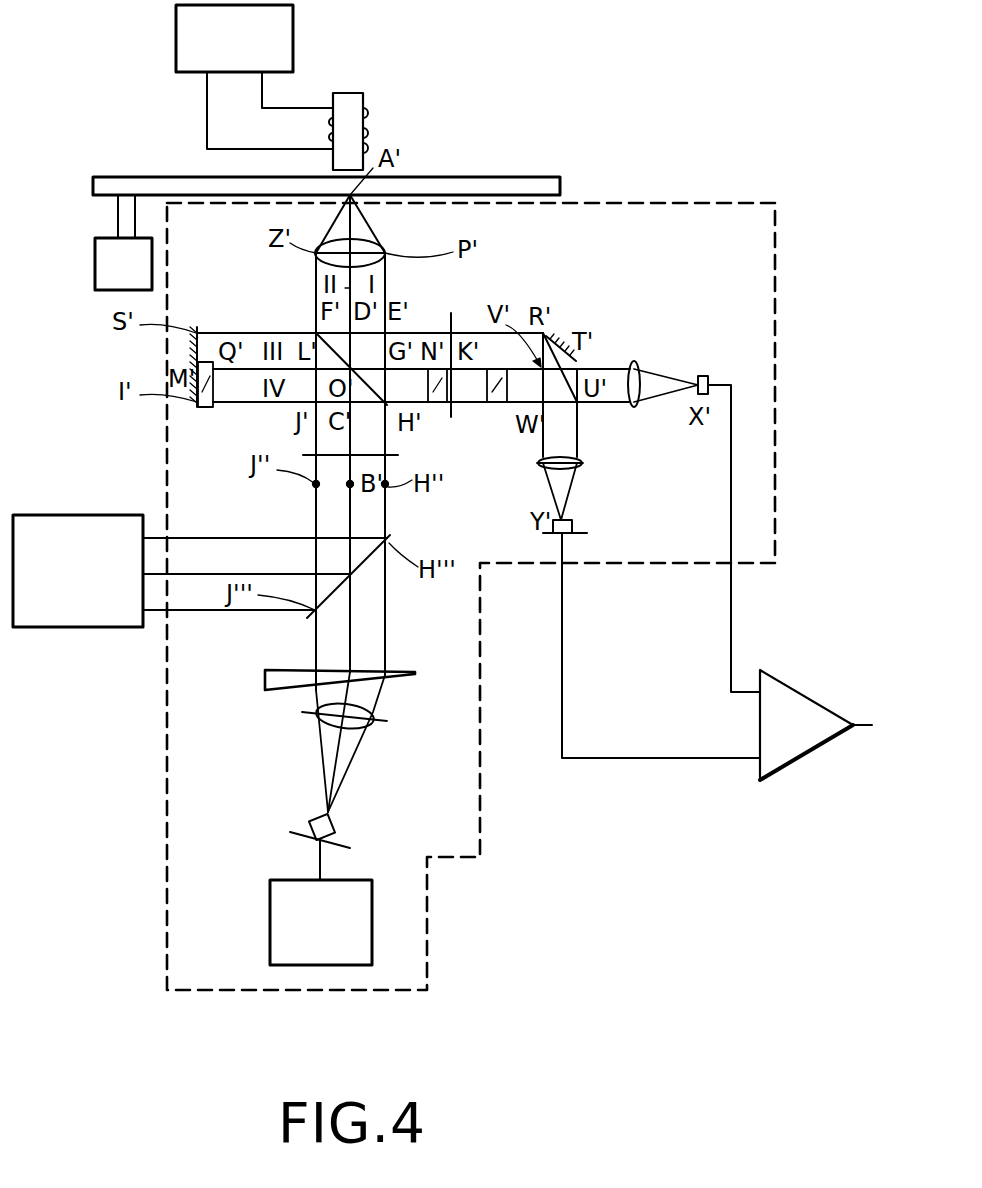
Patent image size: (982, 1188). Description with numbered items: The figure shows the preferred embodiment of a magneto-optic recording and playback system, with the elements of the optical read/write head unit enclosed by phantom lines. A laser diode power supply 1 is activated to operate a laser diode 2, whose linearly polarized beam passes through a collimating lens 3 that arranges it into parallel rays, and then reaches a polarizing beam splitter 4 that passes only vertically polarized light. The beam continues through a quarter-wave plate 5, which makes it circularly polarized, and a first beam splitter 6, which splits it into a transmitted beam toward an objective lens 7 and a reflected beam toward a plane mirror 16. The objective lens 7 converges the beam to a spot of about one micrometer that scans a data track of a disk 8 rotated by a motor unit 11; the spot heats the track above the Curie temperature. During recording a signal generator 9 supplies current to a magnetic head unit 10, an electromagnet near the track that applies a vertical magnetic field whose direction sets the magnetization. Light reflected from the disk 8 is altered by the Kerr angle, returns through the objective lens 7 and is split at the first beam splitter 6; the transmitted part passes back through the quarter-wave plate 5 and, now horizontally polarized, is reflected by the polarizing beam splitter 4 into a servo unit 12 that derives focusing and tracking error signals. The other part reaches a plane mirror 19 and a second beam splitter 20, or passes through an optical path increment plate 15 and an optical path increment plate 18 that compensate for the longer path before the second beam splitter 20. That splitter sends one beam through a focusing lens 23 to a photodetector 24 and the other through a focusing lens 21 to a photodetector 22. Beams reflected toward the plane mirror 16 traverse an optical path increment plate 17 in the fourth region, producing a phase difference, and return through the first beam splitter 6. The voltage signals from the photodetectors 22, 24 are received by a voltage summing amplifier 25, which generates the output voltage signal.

The laser diode power supply 1 is at (270, 913).
The laser diode 2 is at (335, 830).
The collimating lens 3 is at (297, 670).
The polarizing beam splitter 4 is at (398, 532).
The quarter-wave plate 5 is at (362, 459).
The first beam splitter 6 is at (316, 333).
The objective lens 7 is at (386, 252).
The disk 8 is at (468, 177).
The signal generator 9 is at (293, 23).
The magnetic head unit 10 is at (360, 93).
The motor unit 11 is at (96, 260).
The servo unit 12 is at (80, 515).
The optical path increment plate 15 is at (435, 375).
The plane mirror 16 is at (201, 347).
The optical path increment plate 17 is at (208, 407).
The optical path increment plate 18 is at (500, 404).
The plane mirror 19 is at (561, 340).
The second beam splitter 20 is at (578, 403).
The focusing lens 21 is at (638, 347).
The photodetector 22 is at (707, 372).
The focusing lens 23 is at (582, 462).
The photodetector 24 is at (572, 527).
The voltage summing amplifier 25 is at (802, 690).